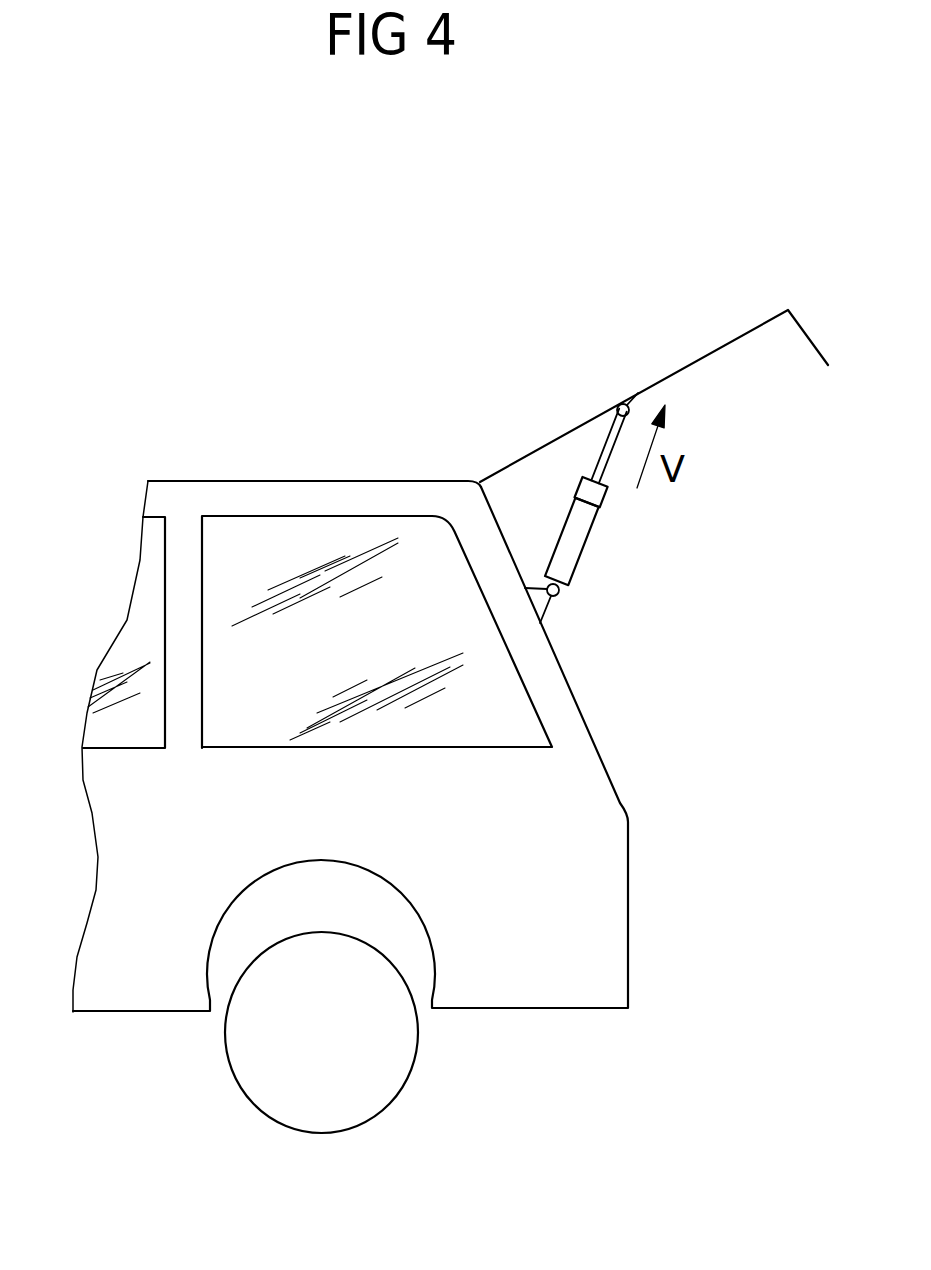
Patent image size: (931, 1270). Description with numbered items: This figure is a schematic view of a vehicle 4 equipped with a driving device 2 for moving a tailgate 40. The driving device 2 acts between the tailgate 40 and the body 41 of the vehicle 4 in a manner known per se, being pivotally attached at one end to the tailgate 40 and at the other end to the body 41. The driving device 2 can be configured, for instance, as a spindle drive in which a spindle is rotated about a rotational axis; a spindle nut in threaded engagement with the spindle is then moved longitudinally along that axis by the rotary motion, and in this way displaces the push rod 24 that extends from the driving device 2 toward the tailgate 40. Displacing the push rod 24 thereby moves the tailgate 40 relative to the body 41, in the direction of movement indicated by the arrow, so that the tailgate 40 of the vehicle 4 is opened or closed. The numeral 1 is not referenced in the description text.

The drive (spindle drive) 1 is at (625, 490).
The driving device 2 is at (590, 558).
The push rod 24 is at (597, 448).
The vehicle 4 is at (403, 710).
The tailgate 40 is at (723, 343).
The body 41 is at (575, 820).